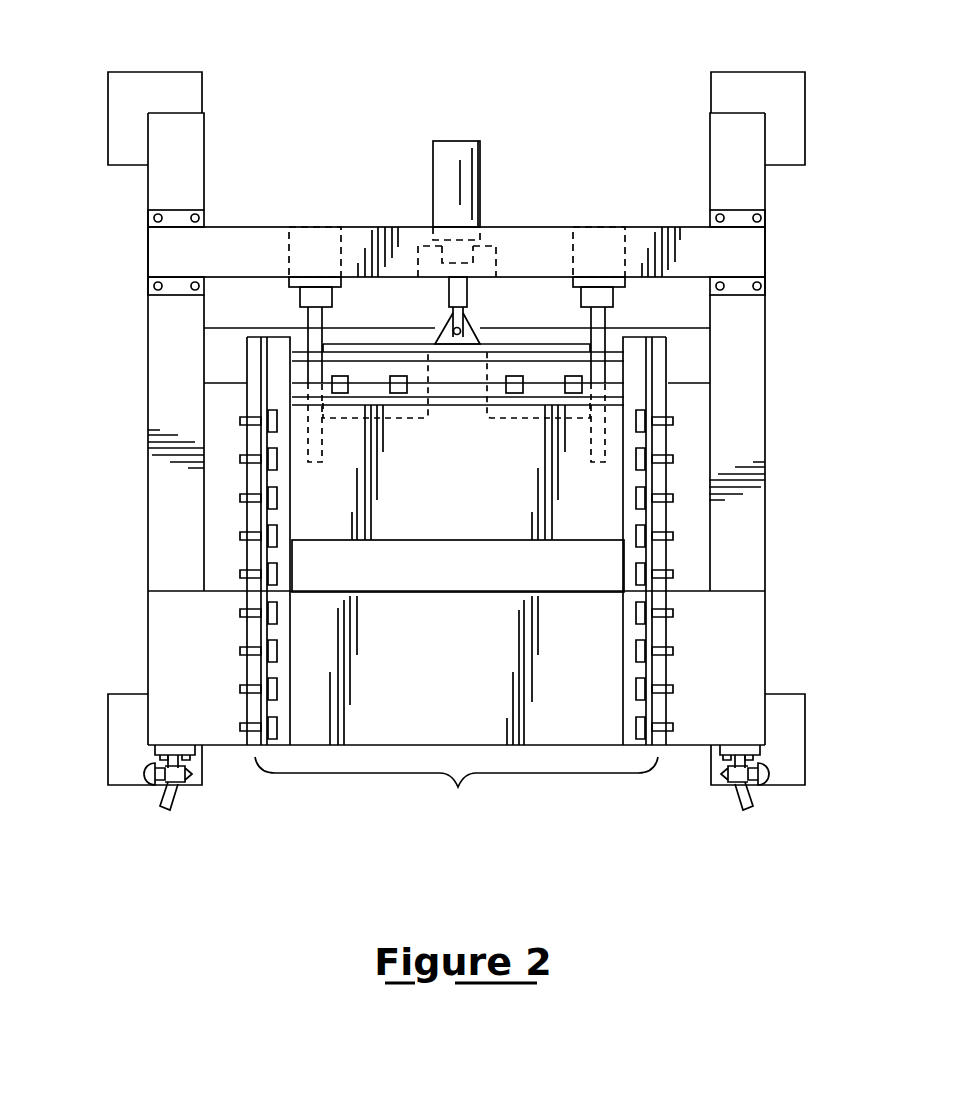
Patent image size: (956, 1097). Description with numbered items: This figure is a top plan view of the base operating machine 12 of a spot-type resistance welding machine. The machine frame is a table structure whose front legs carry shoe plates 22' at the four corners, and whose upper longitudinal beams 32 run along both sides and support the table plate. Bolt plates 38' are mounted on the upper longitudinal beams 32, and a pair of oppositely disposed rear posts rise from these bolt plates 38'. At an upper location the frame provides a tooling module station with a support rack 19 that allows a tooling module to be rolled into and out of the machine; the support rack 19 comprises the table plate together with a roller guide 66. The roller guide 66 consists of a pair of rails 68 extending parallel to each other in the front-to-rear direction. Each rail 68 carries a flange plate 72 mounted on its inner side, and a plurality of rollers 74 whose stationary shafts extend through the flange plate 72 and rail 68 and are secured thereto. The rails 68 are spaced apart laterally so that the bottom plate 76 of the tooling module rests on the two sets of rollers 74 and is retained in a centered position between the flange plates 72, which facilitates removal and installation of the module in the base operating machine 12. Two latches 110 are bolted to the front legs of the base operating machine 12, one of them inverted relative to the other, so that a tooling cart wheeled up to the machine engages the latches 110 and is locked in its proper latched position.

The base operating machine 12 is at (562, 137).
The shoe plates 22' is at (458, 392).
The bolt plates 38' is at (456, 230).
The upper longitudinal beams 32 is at (148, 393).
The bottom plate 76 is at (445, 694).
The rollers 74 is at (268, 567).
The roller guide 66 is at (248, 750).
The rails 68 is at (245, 705).
The flange plate 72 is at (268, 632).
The latch 110 is at (163, 812).
The support rack 19 is at (456, 787).